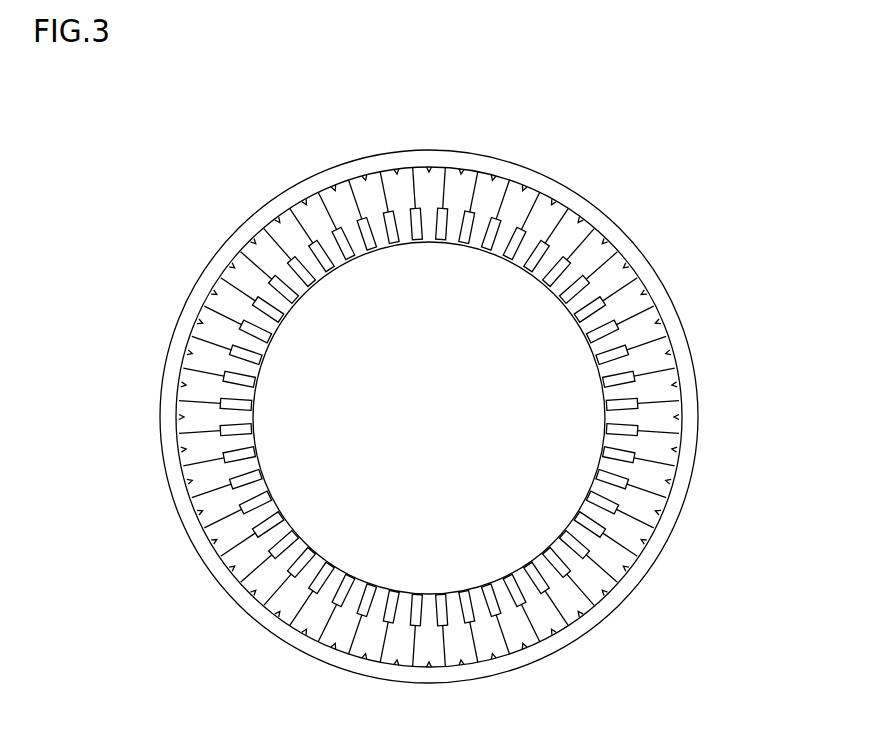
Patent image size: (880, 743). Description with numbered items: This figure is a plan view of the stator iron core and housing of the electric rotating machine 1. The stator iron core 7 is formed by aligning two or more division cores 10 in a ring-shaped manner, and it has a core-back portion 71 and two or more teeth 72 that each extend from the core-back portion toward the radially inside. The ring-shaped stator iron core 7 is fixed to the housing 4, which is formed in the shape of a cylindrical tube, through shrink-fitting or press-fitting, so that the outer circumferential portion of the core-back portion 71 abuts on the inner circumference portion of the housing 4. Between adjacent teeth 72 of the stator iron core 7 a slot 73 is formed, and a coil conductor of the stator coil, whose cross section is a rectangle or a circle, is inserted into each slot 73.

The electric rotating machine 1 is at (305, 128).
The housing 4 is at (428, 156).
The division core 10 is at (497, 187).
The stator iron core 7 is at (252, 252).
The core-back portion 71 is at (220, 304).
The tooth 72 is at (565, 283).
The slot 73 is at (600, 327).